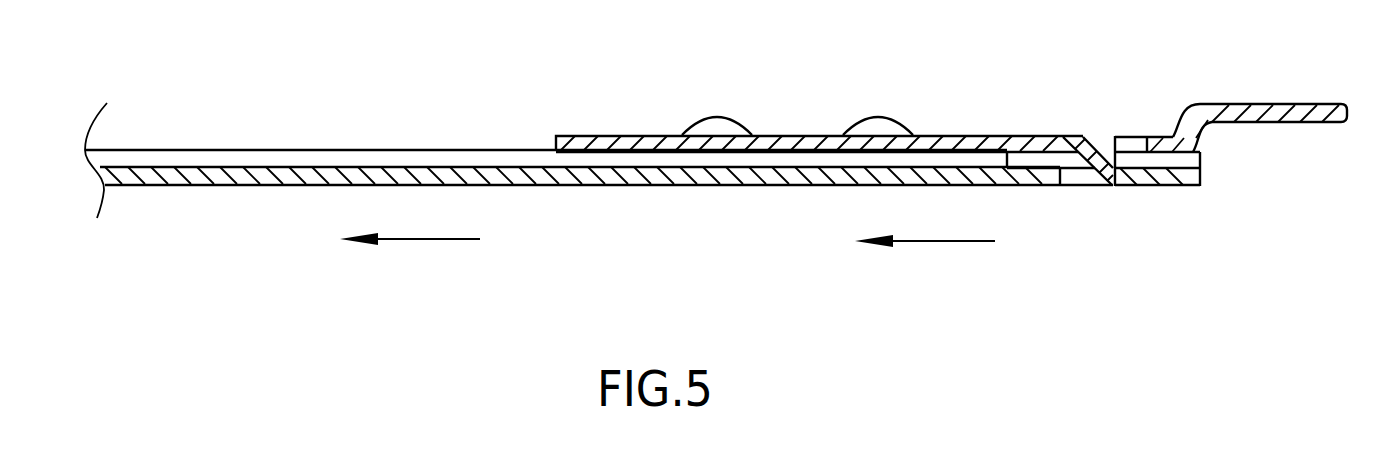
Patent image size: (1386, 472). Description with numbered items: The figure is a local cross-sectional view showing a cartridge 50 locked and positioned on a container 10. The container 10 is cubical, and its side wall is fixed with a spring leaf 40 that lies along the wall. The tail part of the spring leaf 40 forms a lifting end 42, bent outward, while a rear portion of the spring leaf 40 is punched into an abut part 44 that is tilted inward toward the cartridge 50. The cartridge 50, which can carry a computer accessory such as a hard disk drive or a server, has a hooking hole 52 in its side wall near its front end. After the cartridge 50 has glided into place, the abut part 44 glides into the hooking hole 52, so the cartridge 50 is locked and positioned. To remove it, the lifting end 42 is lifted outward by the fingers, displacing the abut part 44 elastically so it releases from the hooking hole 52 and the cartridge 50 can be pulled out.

The container 10 is at (386, 153).
The spring leaf 40 is at (945, 135).
The lifting end 42 is at (1272, 113).
The abut part 44 is at (1088, 150).
The cartridge 50 is at (627, 177).
The hooking hole 52 is at (1080, 177).